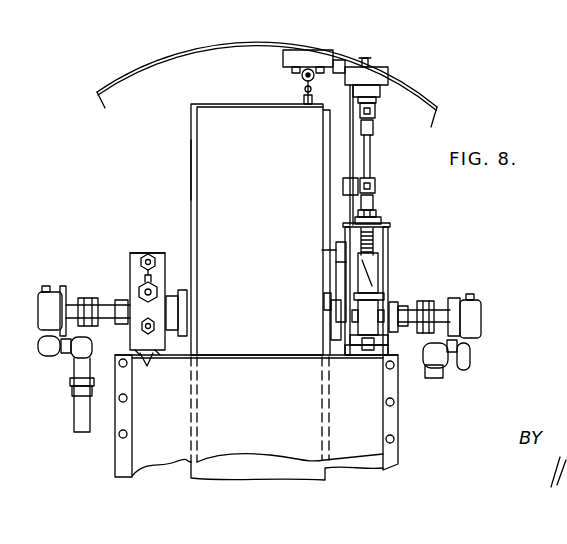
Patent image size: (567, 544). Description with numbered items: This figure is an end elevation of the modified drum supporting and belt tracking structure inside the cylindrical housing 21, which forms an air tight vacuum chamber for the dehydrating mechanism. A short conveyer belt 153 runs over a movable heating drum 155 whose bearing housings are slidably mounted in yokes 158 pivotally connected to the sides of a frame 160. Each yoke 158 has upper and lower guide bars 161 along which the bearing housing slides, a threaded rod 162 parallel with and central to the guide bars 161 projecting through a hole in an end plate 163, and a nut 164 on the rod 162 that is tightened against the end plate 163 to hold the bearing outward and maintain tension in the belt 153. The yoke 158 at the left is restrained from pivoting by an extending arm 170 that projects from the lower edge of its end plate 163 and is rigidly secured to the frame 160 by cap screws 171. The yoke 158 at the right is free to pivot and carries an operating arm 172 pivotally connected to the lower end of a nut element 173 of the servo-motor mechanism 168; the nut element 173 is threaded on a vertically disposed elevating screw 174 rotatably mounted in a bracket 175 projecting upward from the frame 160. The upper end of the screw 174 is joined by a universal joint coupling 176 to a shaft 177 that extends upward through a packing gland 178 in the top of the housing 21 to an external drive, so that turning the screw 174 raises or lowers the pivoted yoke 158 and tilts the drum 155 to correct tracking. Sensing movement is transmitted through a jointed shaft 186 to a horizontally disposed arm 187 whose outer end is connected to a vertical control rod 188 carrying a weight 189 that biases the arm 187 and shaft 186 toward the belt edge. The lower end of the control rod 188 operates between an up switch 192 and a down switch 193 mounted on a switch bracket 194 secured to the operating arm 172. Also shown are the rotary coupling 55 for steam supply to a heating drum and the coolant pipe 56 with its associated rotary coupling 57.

The cylindrical housing 21 is at (164, 56).
The conveyer belt 153 is at (215, 104).
The movable heating drum 155 is at (191, 160).
The horizontally disposed arm 187 is at (296, 80).
The jointed shaft 186 is at (305, 100).
The packing gland 178 is at (383, 82).
The shaft 177 is at (376, 102).
The universal joint coupling 176 is at (372, 163).
The control rod 188 is at (350, 163).
The weight 189 is at (343, 187).
The elevating screw 174 is at (380, 225).
The servo-motor mechanism 168 is at (380, 262).
The up switch 192 is at (342, 243).
The down switch 193 is at (342, 263).
The switch bracket 194 is at (322, 251).
The nut element 173 is at (358, 306).
The yoke 158 is at (133, 248).
The bracket 175 is at (388, 296).
The operating arm 172 is at (378, 335).
The rotary coupling 55 is at (470, 315).
The frame 160 is at (397, 400).
The rotary coupling 57 is at (58, 290).
The end plate 163 is at (135, 283).
The guide bars 161 is at (151, 256).
The threaded rod 162 is at (167, 288).
The nut 164 is at (178, 298).
The extending arm 170 is at (118, 361).
The cap screws 171 is at (160, 371).
The pipe 56 is at (75, 410).